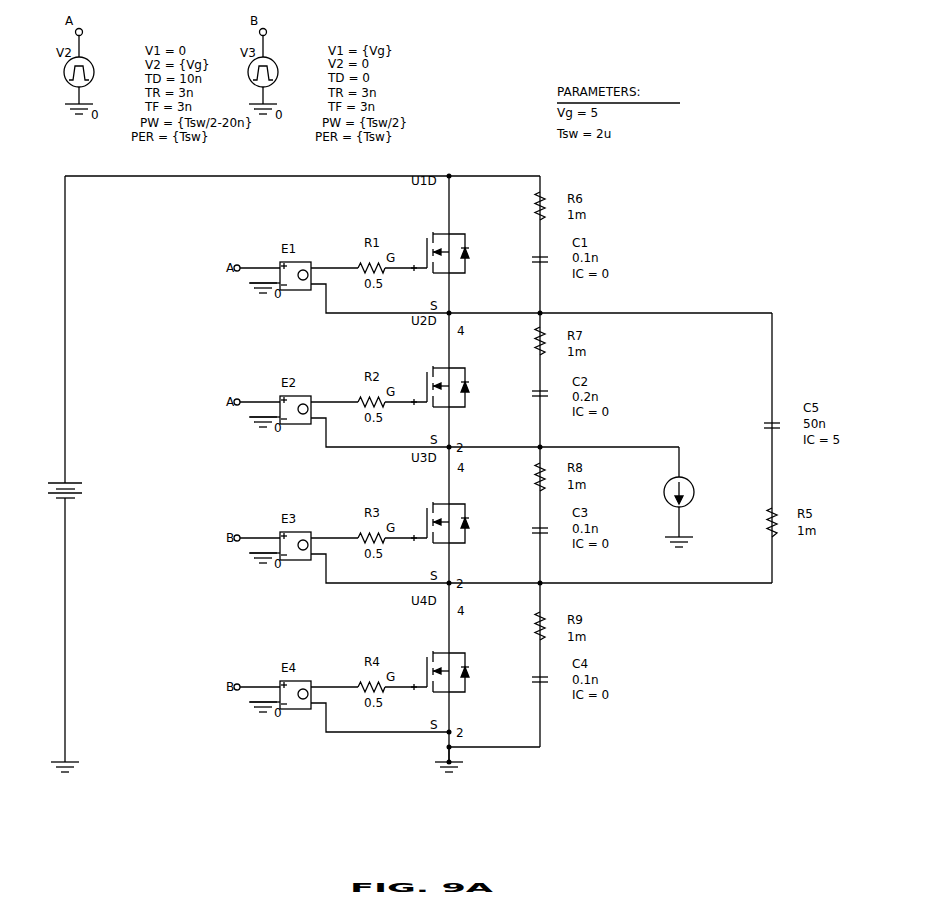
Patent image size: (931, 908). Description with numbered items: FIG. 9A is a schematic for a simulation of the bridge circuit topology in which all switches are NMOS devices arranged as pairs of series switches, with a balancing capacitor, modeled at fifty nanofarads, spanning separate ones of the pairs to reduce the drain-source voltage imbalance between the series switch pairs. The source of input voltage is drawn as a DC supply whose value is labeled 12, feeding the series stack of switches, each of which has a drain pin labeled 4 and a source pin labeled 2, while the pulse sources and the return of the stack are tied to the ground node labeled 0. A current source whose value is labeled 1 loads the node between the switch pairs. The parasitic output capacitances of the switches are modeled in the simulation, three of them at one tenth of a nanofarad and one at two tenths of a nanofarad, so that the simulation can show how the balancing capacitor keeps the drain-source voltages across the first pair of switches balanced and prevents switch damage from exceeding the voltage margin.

The DC voltage source V1 12 is at (56, 480).
The current source I1 1 is at (669, 501).
The MOSFET drain pin 4 is at (457, 205).
The MOSFET source pin 2 is at (610, 314).
The ground node 0 is at (452, 765).